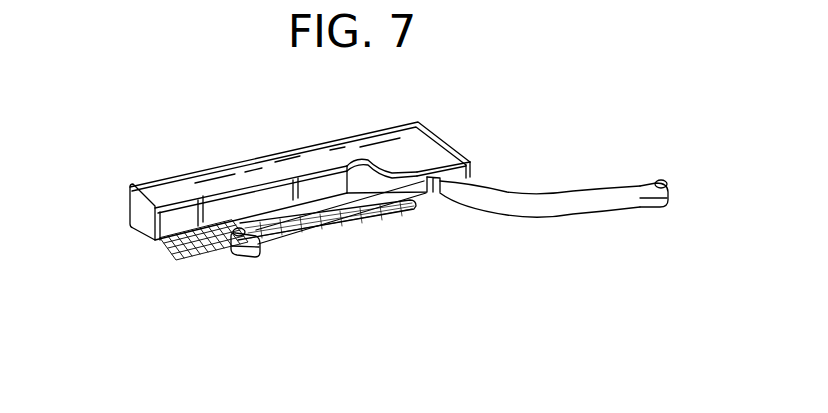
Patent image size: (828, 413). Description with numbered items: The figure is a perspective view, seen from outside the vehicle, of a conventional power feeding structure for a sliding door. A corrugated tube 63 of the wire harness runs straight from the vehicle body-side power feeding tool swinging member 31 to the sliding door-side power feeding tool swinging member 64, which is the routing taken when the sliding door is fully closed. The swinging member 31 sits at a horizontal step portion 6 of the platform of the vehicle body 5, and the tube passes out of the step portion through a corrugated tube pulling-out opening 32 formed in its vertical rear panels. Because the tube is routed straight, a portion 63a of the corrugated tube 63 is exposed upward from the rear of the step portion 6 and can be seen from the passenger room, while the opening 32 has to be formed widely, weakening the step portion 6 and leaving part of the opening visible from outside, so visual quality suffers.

The vehicle body 5 is at (128, 237).
The horizontal step portion 6 is at (400, 218).
The vehicle body-side power feeding tool swinging member 31 is at (428, 194).
The corrugated tube pulling-out opening 32 is at (437, 196).
The corrugated tube 63 is at (577, 190).
The exposed portion of corrugated tube 63a is at (383, 190).
The sliding door-side power feeding tool swinging member 64 is at (248, 258).